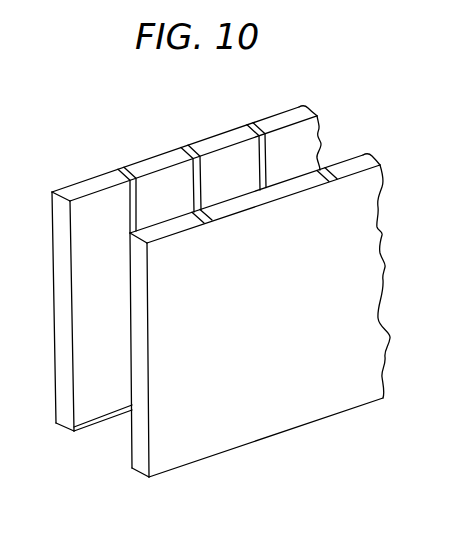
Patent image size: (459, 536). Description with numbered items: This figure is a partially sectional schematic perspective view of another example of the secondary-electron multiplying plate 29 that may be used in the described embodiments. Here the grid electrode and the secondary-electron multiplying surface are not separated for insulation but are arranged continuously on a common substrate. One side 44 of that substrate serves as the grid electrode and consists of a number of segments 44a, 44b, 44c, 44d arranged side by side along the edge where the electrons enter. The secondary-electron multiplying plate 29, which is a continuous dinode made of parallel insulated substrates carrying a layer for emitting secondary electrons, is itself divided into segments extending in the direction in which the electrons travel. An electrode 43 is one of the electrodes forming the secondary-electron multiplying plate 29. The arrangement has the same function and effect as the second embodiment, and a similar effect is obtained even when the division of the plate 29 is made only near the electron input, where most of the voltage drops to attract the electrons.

The side of the substrate 44 is at (58, 188).
The segment 44a is at (85, 186).
The segment 44b is at (147, 163).
The segment 44c is at (213, 140).
The segment 44d is at (283, 117).
The electrode 43 is at (93, 428).
The secondary-electron multiplying plate 29 is at (90, 287).